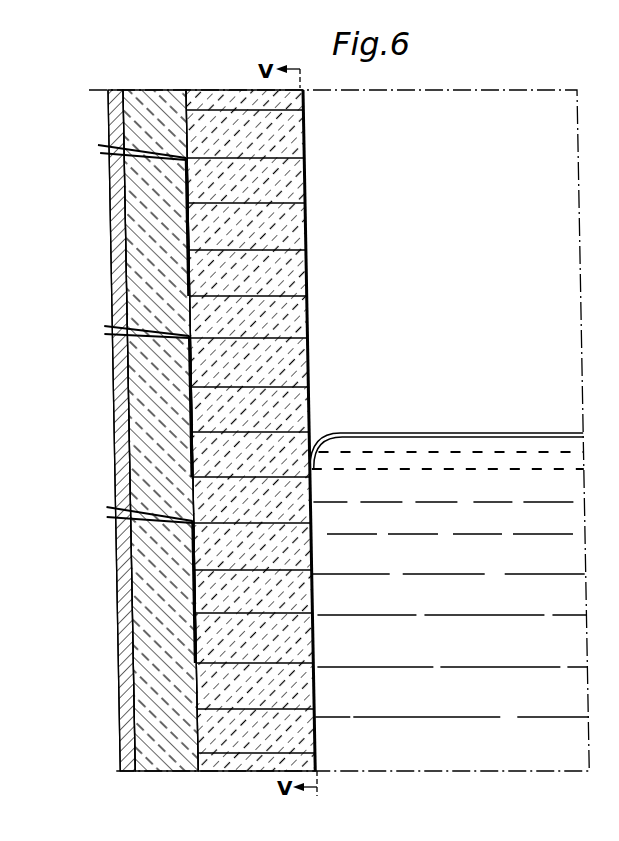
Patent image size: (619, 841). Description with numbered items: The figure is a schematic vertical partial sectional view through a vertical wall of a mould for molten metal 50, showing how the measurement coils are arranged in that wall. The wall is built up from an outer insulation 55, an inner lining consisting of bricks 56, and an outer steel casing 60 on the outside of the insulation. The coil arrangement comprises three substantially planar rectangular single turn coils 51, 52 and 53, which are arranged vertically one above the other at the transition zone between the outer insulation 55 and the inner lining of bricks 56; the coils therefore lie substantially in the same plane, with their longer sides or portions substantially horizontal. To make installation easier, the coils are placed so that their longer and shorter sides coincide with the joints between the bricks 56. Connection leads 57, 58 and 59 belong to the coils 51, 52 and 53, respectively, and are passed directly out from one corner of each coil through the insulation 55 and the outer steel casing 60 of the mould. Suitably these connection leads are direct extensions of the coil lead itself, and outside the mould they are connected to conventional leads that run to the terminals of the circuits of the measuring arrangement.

The molten metal 50 is at (399, 445).
The single turn coil 51 is at (183, 393).
The single turn coil 52 is at (183, 222).
The single turn coil 53 is at (181, 567).
The outer insulation 55 is at (150, 668).
The bricks 56 is at (288, 190).
The connection lead 57 is at (109, 329).
The connection lead 58 is at (107, 146).
The connection lead 59 is at (108, 510).
The outer steel casing 60 is at (116, 468).